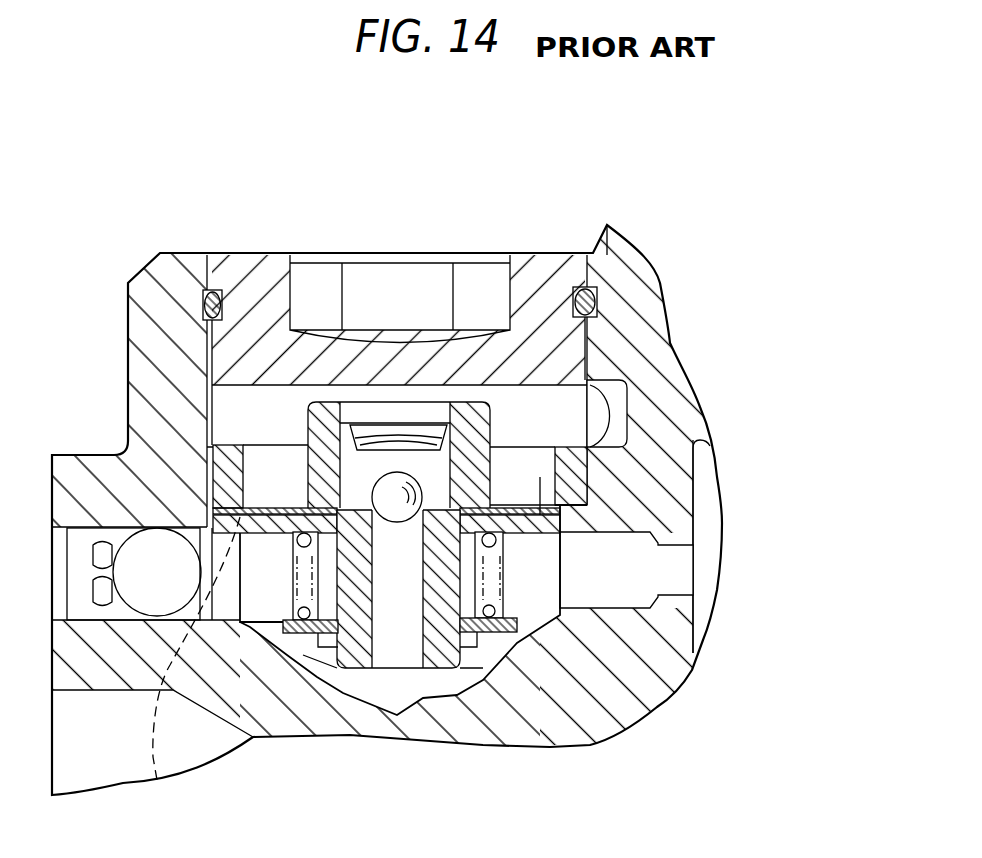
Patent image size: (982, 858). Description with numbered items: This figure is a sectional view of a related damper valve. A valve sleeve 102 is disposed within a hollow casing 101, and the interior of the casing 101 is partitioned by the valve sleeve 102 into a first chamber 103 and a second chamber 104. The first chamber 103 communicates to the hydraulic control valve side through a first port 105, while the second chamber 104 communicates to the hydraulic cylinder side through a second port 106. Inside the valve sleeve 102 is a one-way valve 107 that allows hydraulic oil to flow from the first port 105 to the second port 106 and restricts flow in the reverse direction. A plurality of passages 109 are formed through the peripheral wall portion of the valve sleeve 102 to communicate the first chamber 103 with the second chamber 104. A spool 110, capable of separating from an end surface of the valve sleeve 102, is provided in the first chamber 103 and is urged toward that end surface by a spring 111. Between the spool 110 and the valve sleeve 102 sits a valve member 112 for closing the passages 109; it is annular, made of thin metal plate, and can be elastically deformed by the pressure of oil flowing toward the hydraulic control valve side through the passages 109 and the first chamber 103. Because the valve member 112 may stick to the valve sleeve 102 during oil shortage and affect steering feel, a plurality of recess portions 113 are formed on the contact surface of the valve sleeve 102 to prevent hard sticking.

The hollow casing 101 is at (175, 317).
The valve sleeve 102 is at (703, 447).
The first chamber 103 is at (530, 573).
The second chamber 104 is at (543, 420).
The first port 105 is at (677, 565).
The second port 106 is at (600, 410).
The one-way valve 107 is at (387, 487).
The passage 109 is at (132, 378).
The spool 110 is at (317, 533).
The spring 111 is at (247, 517).
The valve member 112 is at (157, 780).
The recess portion 113 is at (300, 497).